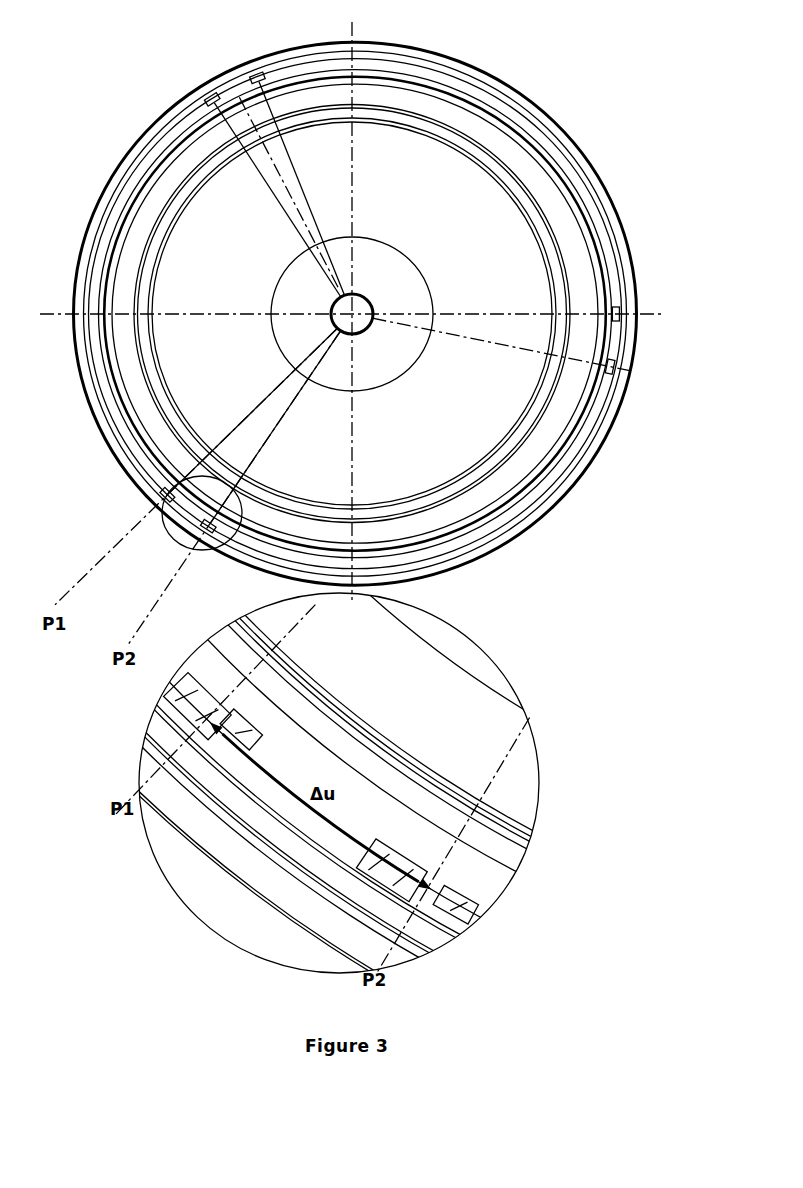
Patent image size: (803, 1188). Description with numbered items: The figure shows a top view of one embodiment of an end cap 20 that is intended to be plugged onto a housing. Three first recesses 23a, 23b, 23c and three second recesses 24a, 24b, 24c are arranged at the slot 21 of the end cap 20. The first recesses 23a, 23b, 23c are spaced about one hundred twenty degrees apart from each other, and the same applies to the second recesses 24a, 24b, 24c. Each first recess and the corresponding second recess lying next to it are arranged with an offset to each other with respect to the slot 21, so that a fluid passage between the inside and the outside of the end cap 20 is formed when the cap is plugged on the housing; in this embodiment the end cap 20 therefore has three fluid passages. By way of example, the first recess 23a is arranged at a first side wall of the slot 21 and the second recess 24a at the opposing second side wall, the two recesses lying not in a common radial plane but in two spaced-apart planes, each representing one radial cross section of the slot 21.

The end cap 20 is at (525, 552).
The slot 21 is at (560, 470).
The first recess 23a is at (172, 494).
The first recess 23b is at (606, 370).
The first recess 23c is at (253, 73).
The second recess 24a is at (167, 520).
The second recess 24b is at (615, 316).
The second recess 24c is at (210, 95).